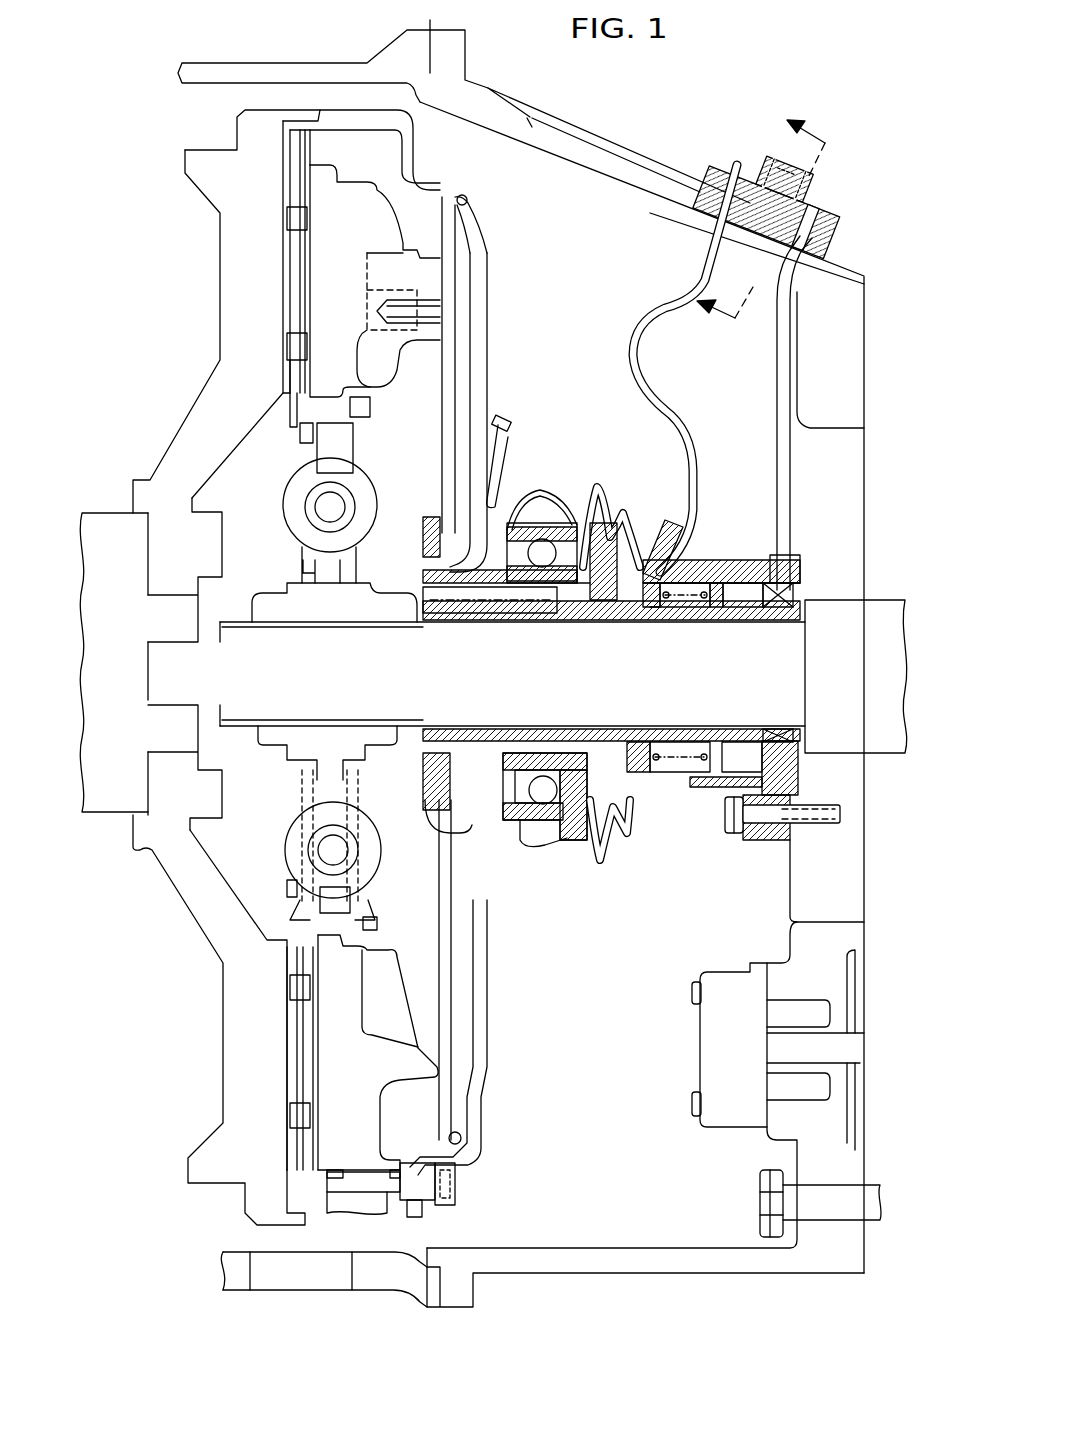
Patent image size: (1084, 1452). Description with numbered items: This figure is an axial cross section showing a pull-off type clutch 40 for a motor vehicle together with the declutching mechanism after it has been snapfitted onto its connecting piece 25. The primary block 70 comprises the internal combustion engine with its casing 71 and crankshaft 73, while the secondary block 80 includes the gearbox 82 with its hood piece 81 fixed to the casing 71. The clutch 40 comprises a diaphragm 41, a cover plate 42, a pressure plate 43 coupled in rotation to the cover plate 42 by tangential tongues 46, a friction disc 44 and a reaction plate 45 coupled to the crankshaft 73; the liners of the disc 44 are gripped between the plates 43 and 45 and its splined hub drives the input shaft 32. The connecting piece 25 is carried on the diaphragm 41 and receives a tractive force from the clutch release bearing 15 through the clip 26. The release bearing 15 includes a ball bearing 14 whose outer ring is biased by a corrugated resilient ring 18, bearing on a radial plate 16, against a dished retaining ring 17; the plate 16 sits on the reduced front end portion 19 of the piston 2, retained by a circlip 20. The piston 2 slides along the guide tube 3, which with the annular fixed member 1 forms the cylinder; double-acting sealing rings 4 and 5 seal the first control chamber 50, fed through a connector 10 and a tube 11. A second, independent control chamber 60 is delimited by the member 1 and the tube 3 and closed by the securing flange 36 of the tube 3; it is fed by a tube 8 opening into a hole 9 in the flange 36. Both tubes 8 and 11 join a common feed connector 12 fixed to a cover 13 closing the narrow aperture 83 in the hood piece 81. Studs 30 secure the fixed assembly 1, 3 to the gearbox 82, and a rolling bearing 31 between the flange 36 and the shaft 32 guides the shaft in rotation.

The fixed member 1 is at (705, 560).
The piston 2 is at (672, 607).
The guide tube 3 is at (673, 725).
The sealing ring 4 is at (713, 638).
The sealing ring 5 is at (637, 615).
The tube 8 is at (777, 393).
The hole 9 is at (793, 590).
The connector 10 is at (685, 528).
The tube 11 is at (684, 397).
The common feed connector 12 is at (797, 215).
The cover 13 is at (641, 152).
The ball bearing 14 is at (540, 523).
The clutch release bearing 15 is at (497, 570).
The radial plate 16 is at (580, 605).
The dished retaining ring 17 is at (520, 503).
The resilient ring 18 is at (583, 505).
The front end portion 19 is at (602, 573).
The restraining circlip 20 is at (548, 590).
The connecting piece 25 is at (473, 835).
The clip 26 is at (503, 403).
The fastening members 30 is at (733, 835).
The rolling bearing 31 is at (780, 733).
The input shaft 32 is at (780, 668).
The securing flange 36 is at (787, 845).
The clutch 40 is at (183, 161).
The diaphragm 41 is at (455, 875).
The cover plate 42 is at (487, 1080).
The pressure plate 43 is at (348, 218).
The friction disc 44 is at (280, 398).
The reaction plate 45 is at (240, 1018).
The tangential tongues 46 is at (386, 1215).
The first control chamber 50 is at (667, 782).
The second control chamber 60 is at (742, 598).
The primary block 70 is at (338, 1290).
The casing 71 is at (243, 63).
The crankshaft 73 is at (100, 513).
The secondary block 80 is at (708, 1270).
The hood piece 81 is at (838, 1273).
The gearbox 82 is at (850, 310).
The aperture 83 is at (530, 125).